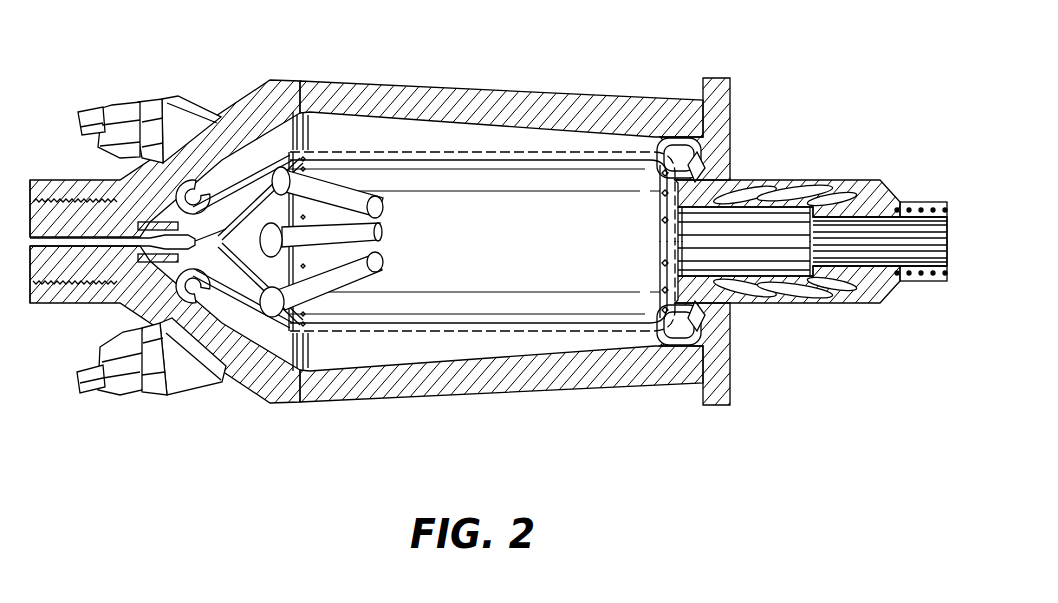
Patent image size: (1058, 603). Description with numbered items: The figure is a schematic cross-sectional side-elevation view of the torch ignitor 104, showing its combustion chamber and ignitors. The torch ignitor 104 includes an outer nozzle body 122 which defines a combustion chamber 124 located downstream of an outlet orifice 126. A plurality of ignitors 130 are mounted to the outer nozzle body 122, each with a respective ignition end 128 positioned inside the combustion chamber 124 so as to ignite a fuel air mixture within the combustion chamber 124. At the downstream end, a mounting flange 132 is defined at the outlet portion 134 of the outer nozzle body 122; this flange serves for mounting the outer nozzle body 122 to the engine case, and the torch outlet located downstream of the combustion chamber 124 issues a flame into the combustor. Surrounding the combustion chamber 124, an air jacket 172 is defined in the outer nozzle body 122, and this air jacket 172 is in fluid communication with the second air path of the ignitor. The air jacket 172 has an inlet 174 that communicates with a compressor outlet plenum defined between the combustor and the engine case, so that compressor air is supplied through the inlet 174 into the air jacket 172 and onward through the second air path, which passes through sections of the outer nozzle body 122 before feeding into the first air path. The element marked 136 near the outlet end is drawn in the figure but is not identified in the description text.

The torch ignitor 104 is at (502, 78).
The outer nozzle body 122 is at (319, 90).
The combustion chamber 124 is at (518, 253).
The outlet orifice 126 is at (218, 233).
The ignition end 128 is at (386, 200).
The ignitors 130 is at (90, 110).
The mounting flange 132 is at (710, 398).
The outlet portion 134 is at (803, 330).
The outlet conduit 136 is at (943, 229).
The air jacket 172 is at (406, 126).
The inlet 174 is at (843, 168).